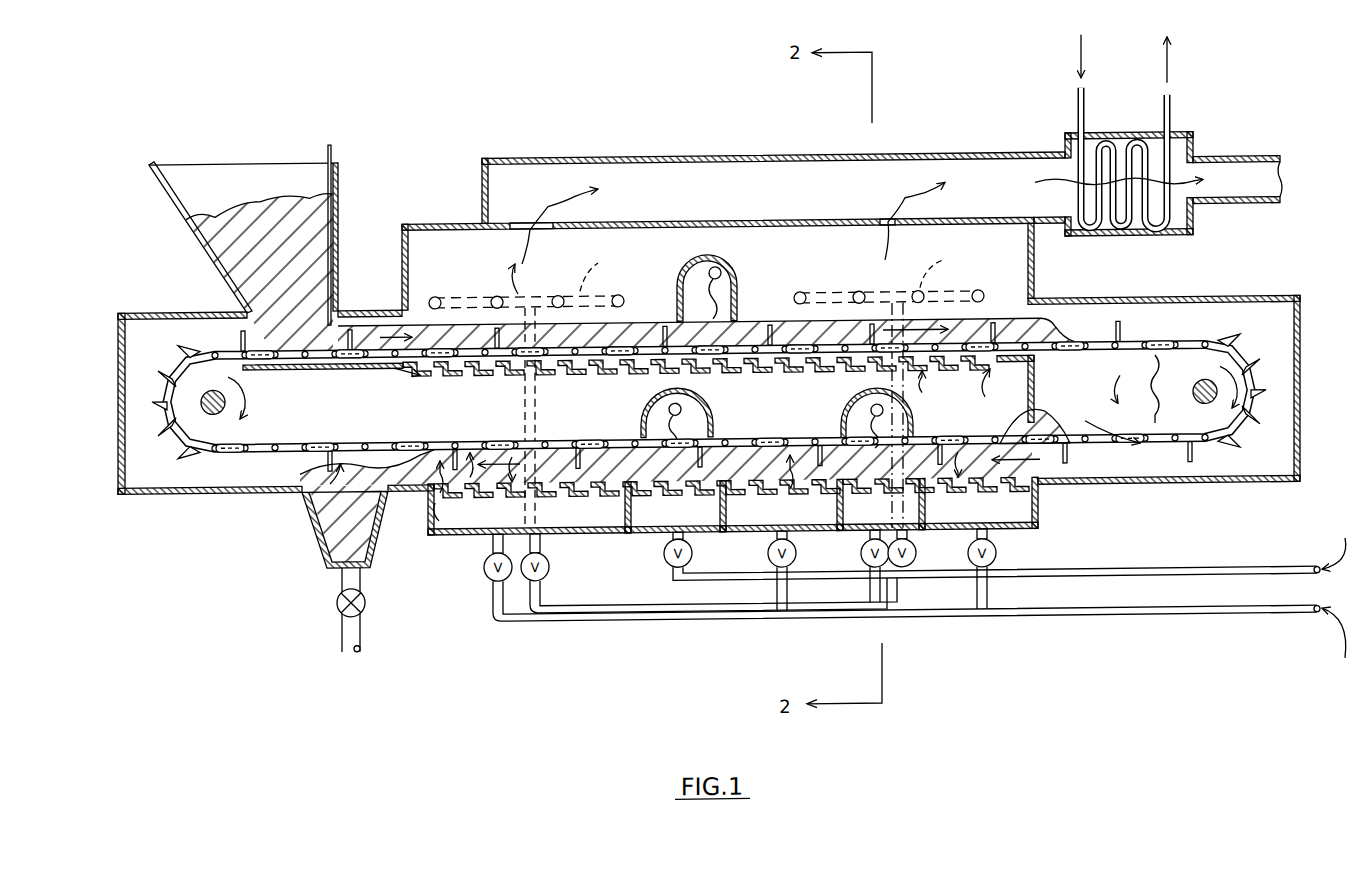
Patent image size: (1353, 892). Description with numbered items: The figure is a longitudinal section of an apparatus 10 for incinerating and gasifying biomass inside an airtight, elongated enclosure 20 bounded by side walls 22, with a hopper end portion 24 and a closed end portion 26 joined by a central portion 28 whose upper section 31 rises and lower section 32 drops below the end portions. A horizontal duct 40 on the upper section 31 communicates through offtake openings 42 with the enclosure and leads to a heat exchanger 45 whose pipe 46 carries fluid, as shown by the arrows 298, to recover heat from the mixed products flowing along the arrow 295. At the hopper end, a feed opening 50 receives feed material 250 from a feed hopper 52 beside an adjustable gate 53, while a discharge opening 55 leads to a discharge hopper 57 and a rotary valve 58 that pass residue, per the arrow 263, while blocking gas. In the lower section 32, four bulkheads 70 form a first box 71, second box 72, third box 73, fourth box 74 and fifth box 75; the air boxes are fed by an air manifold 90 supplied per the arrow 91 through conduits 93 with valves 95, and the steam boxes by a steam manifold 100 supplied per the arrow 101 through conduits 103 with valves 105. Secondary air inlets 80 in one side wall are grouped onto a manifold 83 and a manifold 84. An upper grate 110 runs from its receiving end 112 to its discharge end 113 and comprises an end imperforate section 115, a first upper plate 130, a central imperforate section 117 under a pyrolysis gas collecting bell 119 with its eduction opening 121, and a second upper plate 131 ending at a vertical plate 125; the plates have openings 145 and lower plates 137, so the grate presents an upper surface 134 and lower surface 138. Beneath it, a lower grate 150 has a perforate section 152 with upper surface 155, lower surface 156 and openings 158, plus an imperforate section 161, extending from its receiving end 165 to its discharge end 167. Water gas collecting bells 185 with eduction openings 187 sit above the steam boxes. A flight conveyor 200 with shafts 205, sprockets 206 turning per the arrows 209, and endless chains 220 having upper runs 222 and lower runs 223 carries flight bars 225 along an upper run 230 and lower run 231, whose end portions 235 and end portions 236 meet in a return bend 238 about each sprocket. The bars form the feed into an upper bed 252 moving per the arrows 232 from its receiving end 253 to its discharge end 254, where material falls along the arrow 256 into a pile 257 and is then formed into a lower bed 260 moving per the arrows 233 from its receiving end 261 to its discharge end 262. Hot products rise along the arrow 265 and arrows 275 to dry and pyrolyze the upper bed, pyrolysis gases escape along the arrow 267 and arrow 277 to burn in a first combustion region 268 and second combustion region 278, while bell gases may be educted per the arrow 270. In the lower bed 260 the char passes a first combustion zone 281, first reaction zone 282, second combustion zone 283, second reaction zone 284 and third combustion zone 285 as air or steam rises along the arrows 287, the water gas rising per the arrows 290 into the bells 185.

The apparatus 10 is at (293, 668).
The enclosure 20 is at (122, 496).
The side walls 22 is at (988, 254).
The hopper end portion 24 is at (118, 392).
The closed end portion 26 is at (1300, 428).
The central portion 28 is at (445, 245).
The upper section 31 is at (1036, 255).
The lower section 32 is at (1040, 500).
The horizontal duct 40 is at (530, 175).
The offtake openings 42 is at (528, 228).
The heat exchanger 45 is at (1185, 130).
The pipe 46 is at (1148, 150).
The feed opening 50 is at (265, 330).
The feed hopper 52 is at (215, 253).
The gate 53 is at (333, 258).
The discharge opening 55 is at (320, 492).
The discharge hopper 57 is at (322, 548).
The rotary valve 58 is at (337, 600).
The bulkheads 70 is at (650, 540).
The first box 71 is at (1010, 530).
The second box 72 is at (910, 522).
The third box 73 is at (820, 522).
The fourth box 74 is at (695, 522).
The fifth box 75 is at (475, 520).
The secondary air inlets 80 is at (437, 294).
The manifold 83 is at (572, 386).
The manifold 84 is at (947, 260).
The air manifold 90 is at (1270, 618).
The arrow 91 is at (1322, 634).
The conduits 93 is at (537, 600).
The valve 95 is at (535, 580).
The steam manifold 100 is at (1270, 573).
The arrow 101 is at (1318, 549).
The conduits 103 is at (888, 585).
The valve 105 is at (672, 570).
The upper grate 110 is at (400, 368).
The receiving end 112 is at (400, 292).
The discharge end 113 is at (1034, 382).
The end imperforate section 115 is at (332, 366).
The central imperforate section 117 is at (760, 368).
The pyrolysis gas collecting bell 119 is at (700, 256).
The pyrolysis gas eduction opening 121 is at (709, 272).
The vertical plate 125 is at (1028, 400).
The first upper plate 130 is at (560, 373).
The second upper plate 131 is at (788, 355).
The upper surface 134 is at (1030, 345).
The lower plates 137 is at (660, 373).
The lower surface 138 is at (900, 373).
The openings 145 is at (478, 375).
The lower grate 150 is at (515, 455).
The perforate section 152 is at (955, 455).
The upper surface 155 is at (455, 480).
The lower surface 156 is at (428, 515).
The openings 158 is at (448, 510).
The imperforate section 161 is at (1108, 486).
The receiving end 165 is at (1135, 486).
The discharge end 167 is at (438, 470).
The water gas collecting bells 185 is at (845, 418).
The water gas eduction openings 187 is at (850, 395).
The flight conveyor 200 is at (120, 482).
The shafts 205 is at (205, 405).
The sprockets 206 is at (160, 430).
The arrows 209 is at (1262, 396).
The endless chains 220 is at (295, 450).
The upper runs 222 is at (598, 338).
The lower runs 223 is at (480, 450).
The flight bars 225 is at (690, 326).
The upper run 230 is at (1110, 345).
The lower run 231 is at (1180, 447).
The arrows 232 is at (395, 330).
The arrows 233 is at (1050, 490).
The end portions 235 is at (315, 356).
The end portions 236 is at (280, 446).
The return bend 238 is at (118, 365).
The feed material 250 is at (238, 240).
The upper bed 252 is at (625, 325).
The receiving end 253 is at (258, 310).
The discharge end 254 is at (1050, 322).
The arrow 256 is at (1136, 389).
The pile 257 is at (1072, 426).
The lower bed 260 is at (600, 465).
The receiving end 261 is at (1165, 488).
The discharge end 262 is at (385, 462).
The arrow 263 is at (330, 488).
The arrow 265 is at (435, 375).
The arrow 267 is at (520, 265).
The first combustion region 268 is at (485, 245).
The arrow 270 is at (717, 279).
The arrows 275 is at (998, 383).
The arrow 277 is at (925, 265).
The second combustion region 278 is at (822, 268).
The first combustion zone 281 is at (990, 497).
The first reaction zone 282 is at (895, 498).
The second combustion zone 283 is at (760, 496).
The second reaction zone 284 is at (690, 498).
The third combustion zone 285 is at (585, 500).
The arrows 287 is at (560, 500).
The arrows 290 is at (868, 430).
The arrow 295 is at (572, 198).
The arrows 298 is at (1166, 55).